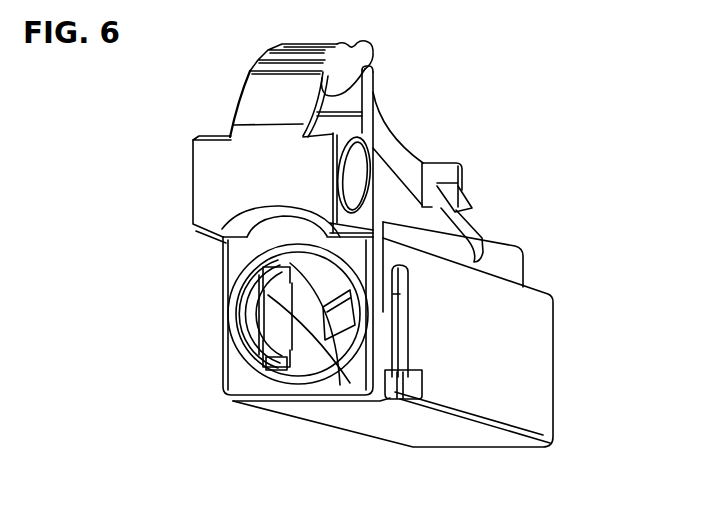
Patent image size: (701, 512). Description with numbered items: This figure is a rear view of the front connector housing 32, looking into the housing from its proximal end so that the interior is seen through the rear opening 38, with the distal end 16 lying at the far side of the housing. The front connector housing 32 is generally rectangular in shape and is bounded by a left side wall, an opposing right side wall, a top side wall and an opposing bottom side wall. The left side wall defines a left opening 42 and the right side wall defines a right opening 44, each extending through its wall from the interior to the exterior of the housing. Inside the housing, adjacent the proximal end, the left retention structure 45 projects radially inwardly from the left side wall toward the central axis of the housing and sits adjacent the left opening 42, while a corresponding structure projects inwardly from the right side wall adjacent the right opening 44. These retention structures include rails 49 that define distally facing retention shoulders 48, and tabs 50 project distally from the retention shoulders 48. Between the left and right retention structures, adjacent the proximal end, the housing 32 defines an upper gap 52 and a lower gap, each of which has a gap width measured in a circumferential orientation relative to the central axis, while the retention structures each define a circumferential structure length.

The distal end 16 is at (569, 427).
The front connector housing 32 is at (568, 159).
The rear opening 38 is at (196, 297).
The left opening 42 is at (278, 307).
The right opening 44 is at (400, 292).
The left retention structure 45 is at (262, 347).
The retention shoulder 48 is at (300, 312).
The rail 49 is at (258, 318).
The tab 50 is at (290, 310).
The upper gap 52 is at (280, 257).